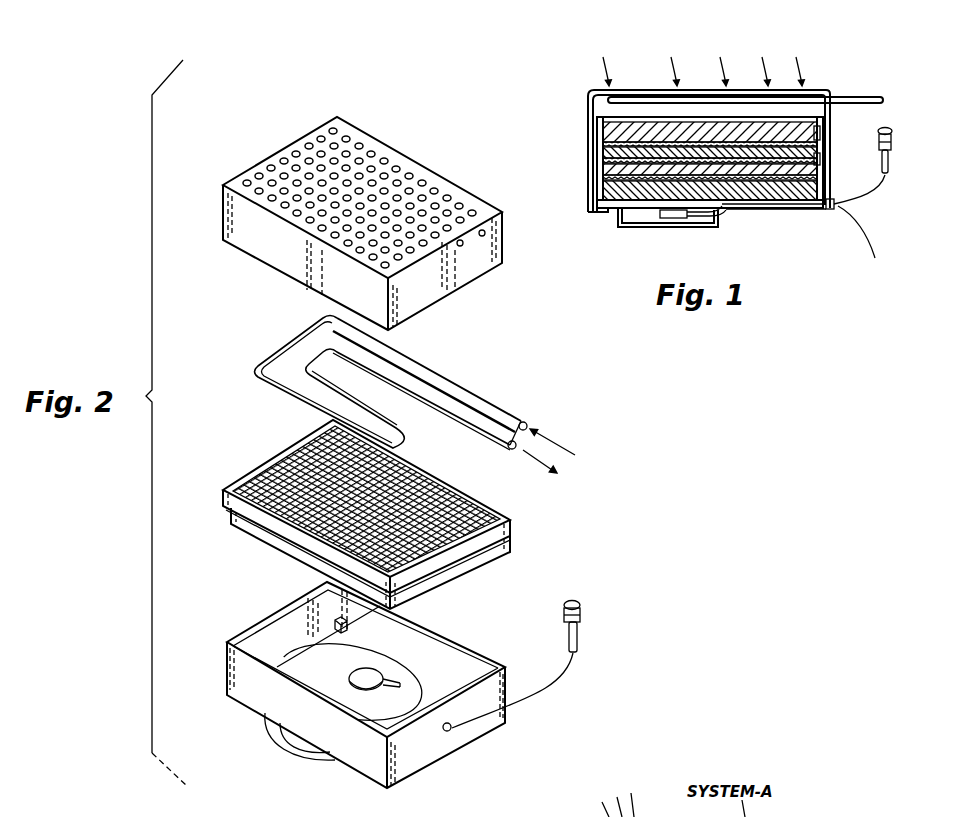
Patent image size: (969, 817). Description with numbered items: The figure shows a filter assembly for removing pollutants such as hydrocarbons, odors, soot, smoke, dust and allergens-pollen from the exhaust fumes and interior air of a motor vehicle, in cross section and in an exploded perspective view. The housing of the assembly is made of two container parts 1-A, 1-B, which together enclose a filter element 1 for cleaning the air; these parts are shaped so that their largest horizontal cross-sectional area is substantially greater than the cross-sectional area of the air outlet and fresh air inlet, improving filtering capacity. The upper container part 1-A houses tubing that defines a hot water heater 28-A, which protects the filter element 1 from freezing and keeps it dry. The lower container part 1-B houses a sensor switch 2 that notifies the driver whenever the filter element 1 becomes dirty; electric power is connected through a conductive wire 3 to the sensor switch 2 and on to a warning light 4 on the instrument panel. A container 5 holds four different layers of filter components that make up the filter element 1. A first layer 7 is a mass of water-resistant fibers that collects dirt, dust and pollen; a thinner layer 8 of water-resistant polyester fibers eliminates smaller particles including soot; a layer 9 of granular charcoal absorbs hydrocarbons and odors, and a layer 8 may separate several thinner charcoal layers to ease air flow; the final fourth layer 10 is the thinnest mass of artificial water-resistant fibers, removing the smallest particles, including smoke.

In FIG. 1, the filter element 1 is at (637, 120).
In FIG. 2, the filter element 1 is at (243, 468).
In FIG. 1, the container part 1-A is at (588, 103).
In FIG. 2, the container part 1-A is at (240, 173).
In FIG. 1, the container part 1-B is at (597, 142).
In FIG. 2, the container part 1-B is at (227, 650).
In FIG. 1, the sensor switch 2 is at (675, 220).
In FIG. 2, the sensor switch 2 is at (385, 677).
In FIG. 1, the conductive wire 3 is at (860, 225).
In FIG. 2, the conductive wire 3 is at (450, 730).
In FIG. 1, the warning light 4 is at (893, 157).
In FIG. 2, the warning light 4 is at (580, 632).
In FIG. 1, the container 5 is at (620, 215).
In FIG. 1, the first layer 7 is at (600, 153).
In FIG. 1, the second or third layer 8 is at (602, 167).
In FIG. 1, the third or second layer 9 is at (827, 158).
In FIG. 1, the fourth layer 10 is at (602, 188).
In FIG. 1, the hot water heater 28-A is at (850, 97).
In FIG. 2, the hot water heater 28-A is at (483, 415).